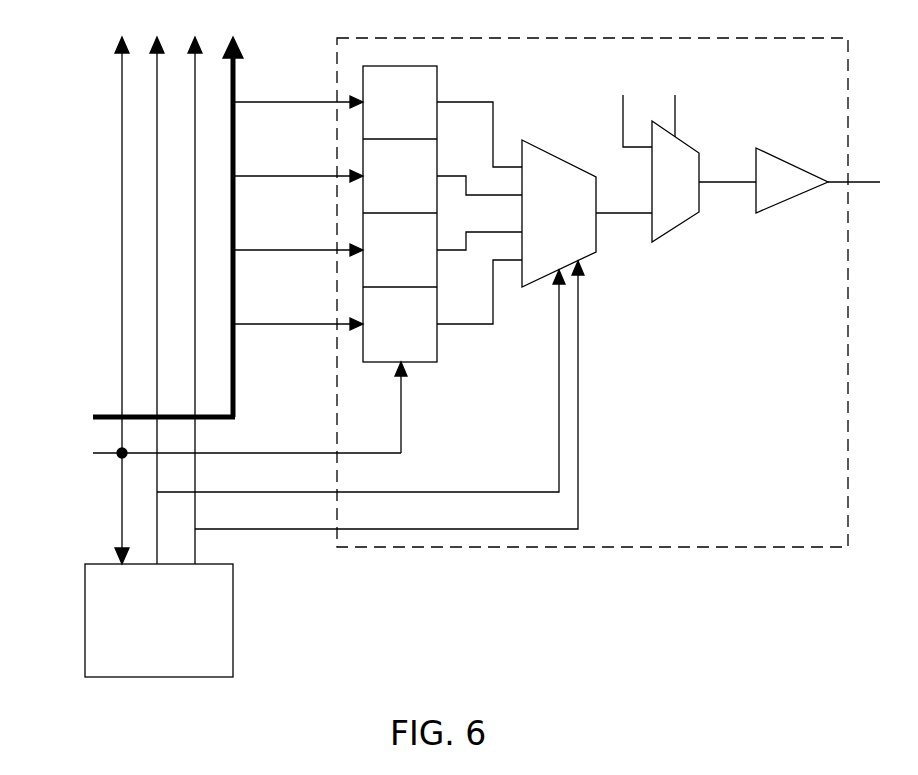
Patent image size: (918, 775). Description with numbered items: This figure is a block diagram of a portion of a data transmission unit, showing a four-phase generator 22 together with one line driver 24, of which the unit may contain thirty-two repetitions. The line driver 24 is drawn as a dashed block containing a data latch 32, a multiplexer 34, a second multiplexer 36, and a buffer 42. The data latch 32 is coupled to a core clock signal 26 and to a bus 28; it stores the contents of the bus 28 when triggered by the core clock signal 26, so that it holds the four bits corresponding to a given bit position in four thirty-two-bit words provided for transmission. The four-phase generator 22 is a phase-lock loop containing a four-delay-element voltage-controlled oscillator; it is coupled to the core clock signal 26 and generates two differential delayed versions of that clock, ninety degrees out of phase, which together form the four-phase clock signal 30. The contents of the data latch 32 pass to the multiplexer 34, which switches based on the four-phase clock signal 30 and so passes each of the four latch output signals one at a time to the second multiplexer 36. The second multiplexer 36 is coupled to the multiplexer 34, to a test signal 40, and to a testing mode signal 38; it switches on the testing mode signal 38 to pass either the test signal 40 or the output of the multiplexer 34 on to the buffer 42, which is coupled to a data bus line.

The 4-phase generator 22 is at (144, 668).
The line driver 24 is at (813, 540).
The core clock signal 26 is at (228, 414).
The bus 28 is at (206, 232).
The 4-phase clock signal 30 is at (370, 395).
The data latch 32 is at (386, 354).
The multiplexer 34 is at (545, 228).
The second multiplexer 36 is at (660, 193).
The testing mode signal 38 is at (675, 102).
The test signal 40 is at (630, 107).
The buffer 42 is at (758, 193).